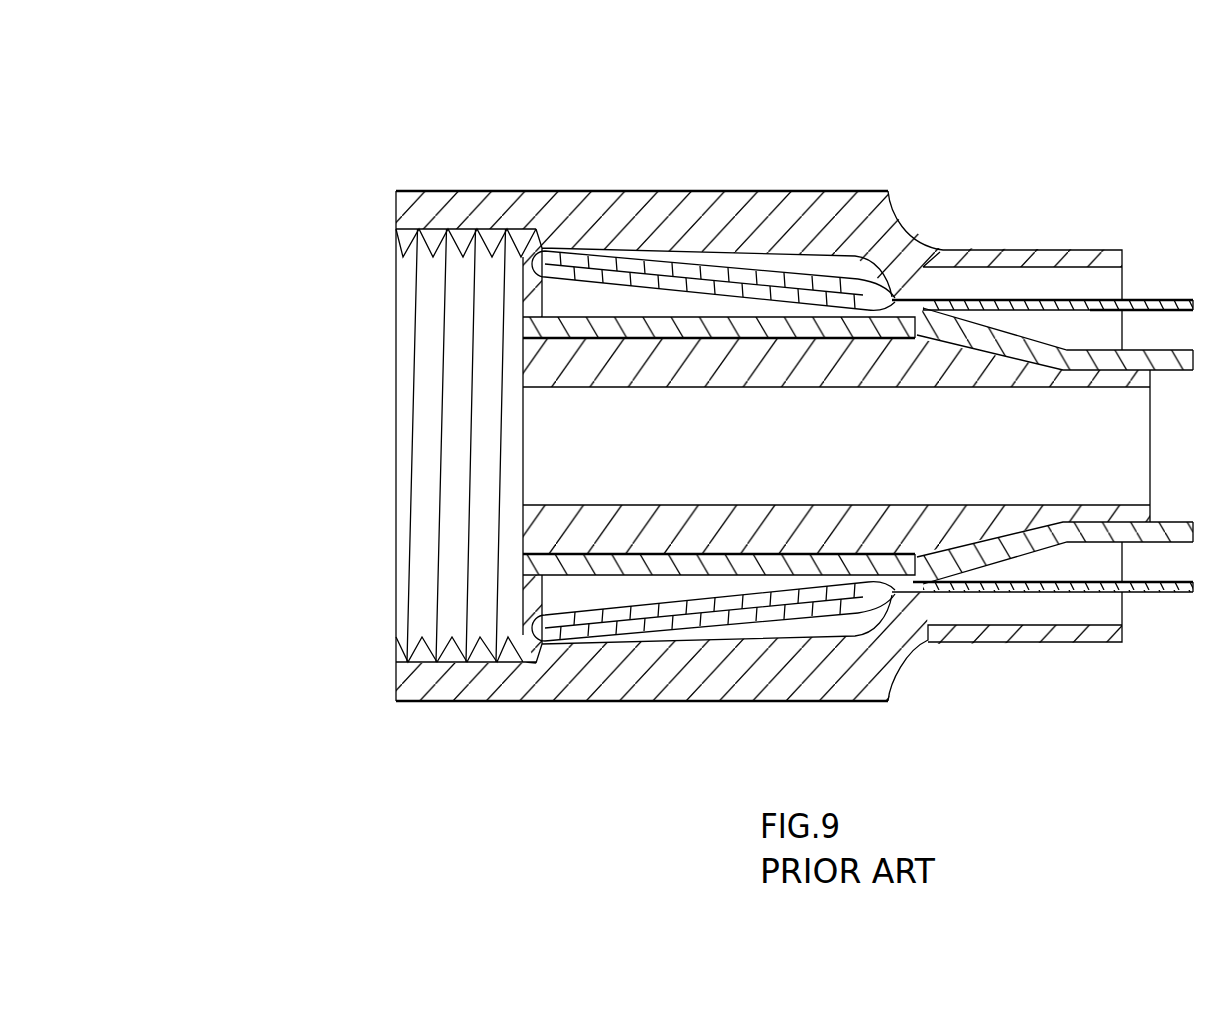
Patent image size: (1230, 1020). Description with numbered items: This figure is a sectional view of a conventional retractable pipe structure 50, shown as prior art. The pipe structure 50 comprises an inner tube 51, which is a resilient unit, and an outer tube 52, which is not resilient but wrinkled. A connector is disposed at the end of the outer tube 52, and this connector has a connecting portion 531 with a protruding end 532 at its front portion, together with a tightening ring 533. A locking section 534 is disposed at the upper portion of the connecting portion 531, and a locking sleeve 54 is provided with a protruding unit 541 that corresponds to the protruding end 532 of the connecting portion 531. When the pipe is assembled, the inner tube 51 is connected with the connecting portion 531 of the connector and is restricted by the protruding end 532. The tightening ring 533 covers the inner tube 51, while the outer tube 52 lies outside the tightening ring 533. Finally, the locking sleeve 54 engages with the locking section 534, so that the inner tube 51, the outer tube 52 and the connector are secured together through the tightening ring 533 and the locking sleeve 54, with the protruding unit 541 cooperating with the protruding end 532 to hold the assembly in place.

The pipe structure 50 is at (470, 165).
The inner tube 51 is at (775, 325).
The outer tube 52 is at (1066, 300).
The locking sleeve 54 is at (872, 236).
The connecting portion 531 is at (606, 355).
The protruding end 532 is at (925, 305).
The tightening ring 533 is at (682, 272).
The locking section 534 is at (417, 271).
The protruding unit 541 is at (895, 296).